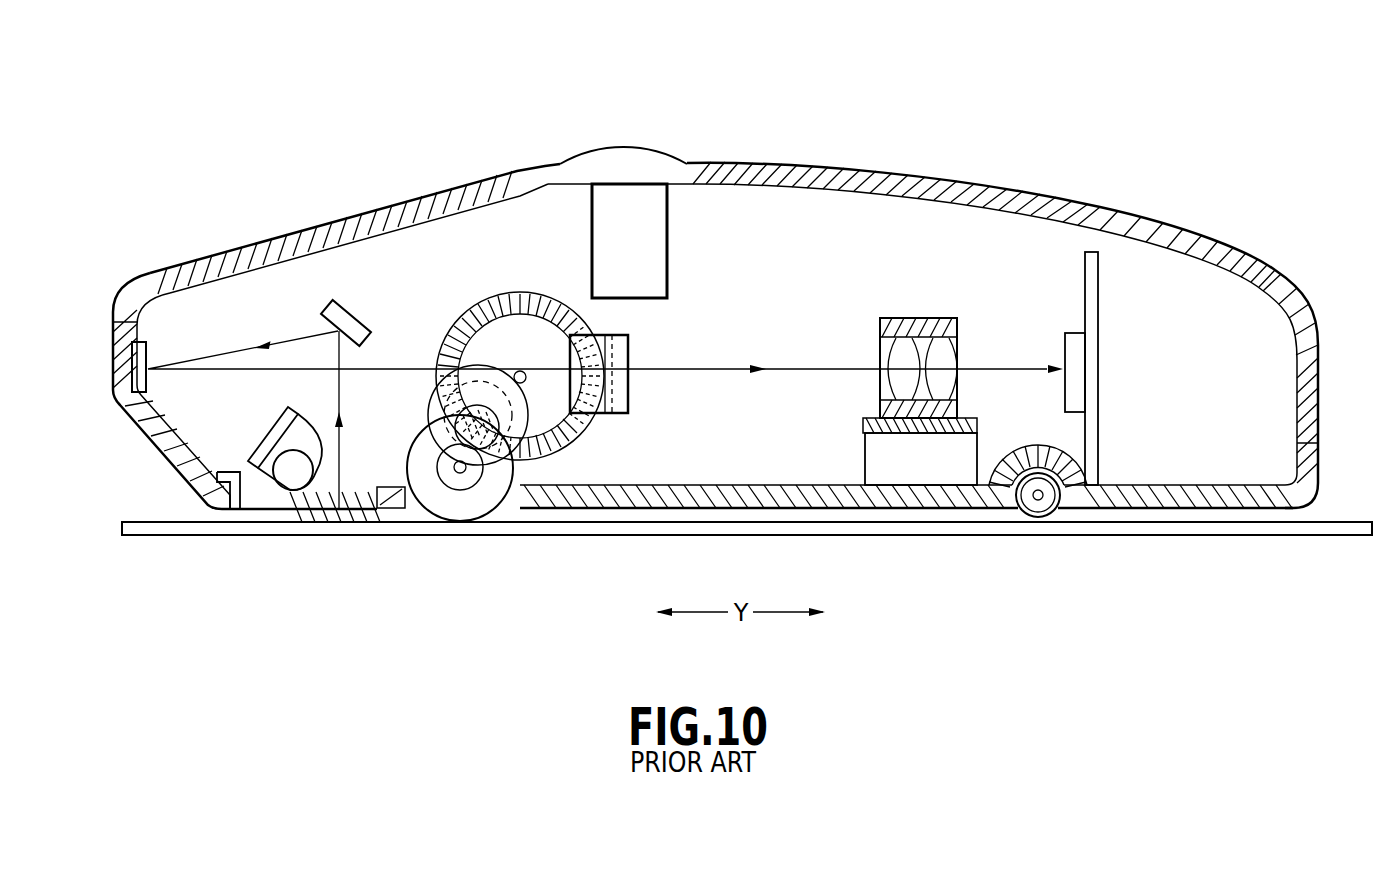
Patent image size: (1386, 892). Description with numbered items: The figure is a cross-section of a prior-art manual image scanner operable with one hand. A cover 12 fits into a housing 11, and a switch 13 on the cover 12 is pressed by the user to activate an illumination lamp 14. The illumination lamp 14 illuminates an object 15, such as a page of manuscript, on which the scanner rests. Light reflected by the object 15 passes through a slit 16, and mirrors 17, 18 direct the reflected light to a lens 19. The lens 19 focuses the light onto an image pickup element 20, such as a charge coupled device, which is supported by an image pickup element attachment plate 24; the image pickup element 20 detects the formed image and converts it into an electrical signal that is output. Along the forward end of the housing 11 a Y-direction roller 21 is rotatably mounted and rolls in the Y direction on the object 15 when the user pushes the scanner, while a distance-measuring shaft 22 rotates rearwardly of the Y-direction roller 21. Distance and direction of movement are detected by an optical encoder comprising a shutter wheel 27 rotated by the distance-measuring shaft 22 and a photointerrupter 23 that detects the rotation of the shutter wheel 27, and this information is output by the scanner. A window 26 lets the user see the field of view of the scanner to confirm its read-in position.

The housing 11 is at (837, 498).
The cover 12 is at (810, 172).
The switch 13 is at (626, 160).
The illumination lamp 14 is at (292, 473).
The object 15 is at (163, 527).
The slit 16 is at (360, 493).
The mirror 17 is at (344, 306).
The mirror 18 is at (132, 360).
The lens 19 is at (887, 380).
The image pickup element 20 is at (1065, 340).
The Y-direction roller 21 is at (1033, 512).
The distance-measuring shaft 22 is at (465, 500).
The photointerrupter 23 is at (618, 393).
The image pickup element attachment plate 24 is at (1100, 303).
The window 26 is at (433, 195).
The shutter wheel 27 is at (565, 450).